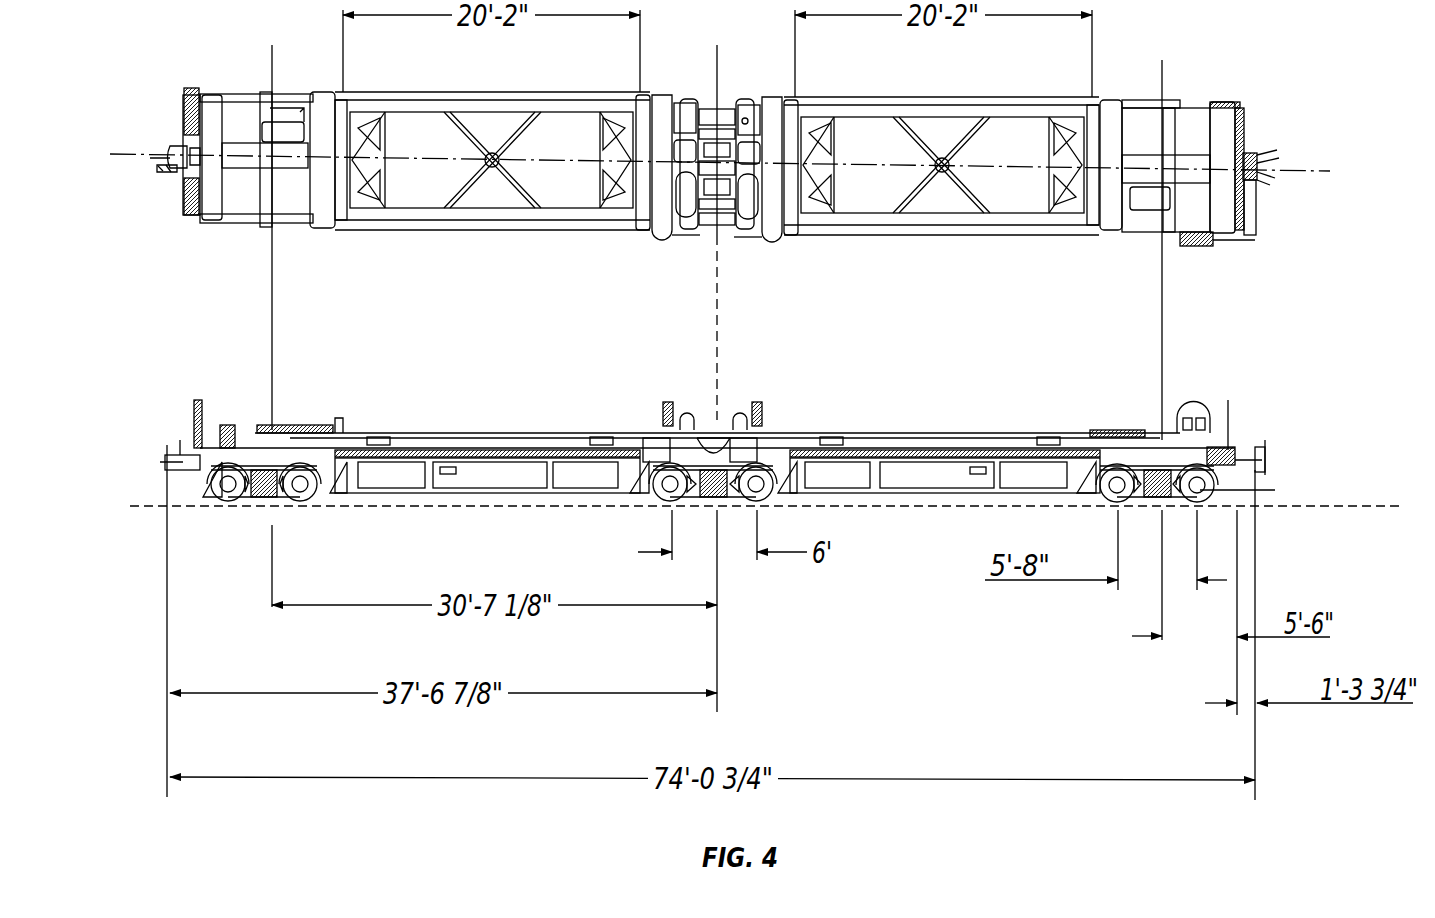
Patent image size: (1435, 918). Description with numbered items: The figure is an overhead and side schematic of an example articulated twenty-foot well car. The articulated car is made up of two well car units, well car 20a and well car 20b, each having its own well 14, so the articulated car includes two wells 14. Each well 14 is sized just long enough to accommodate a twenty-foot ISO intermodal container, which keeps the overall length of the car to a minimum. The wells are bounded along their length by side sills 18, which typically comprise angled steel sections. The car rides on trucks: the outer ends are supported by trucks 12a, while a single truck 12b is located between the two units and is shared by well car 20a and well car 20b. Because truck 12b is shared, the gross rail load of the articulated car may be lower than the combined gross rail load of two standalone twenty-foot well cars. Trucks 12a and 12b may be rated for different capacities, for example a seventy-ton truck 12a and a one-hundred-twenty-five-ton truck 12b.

The truck 12a is at (235, 503).
The truck 12b is at (733, 512).
The well 14 is at (408, 150).
The side sill 18 is at (495, 430).
The well car 20a is at (457, 299).
The well car 20b is at (940, 299).